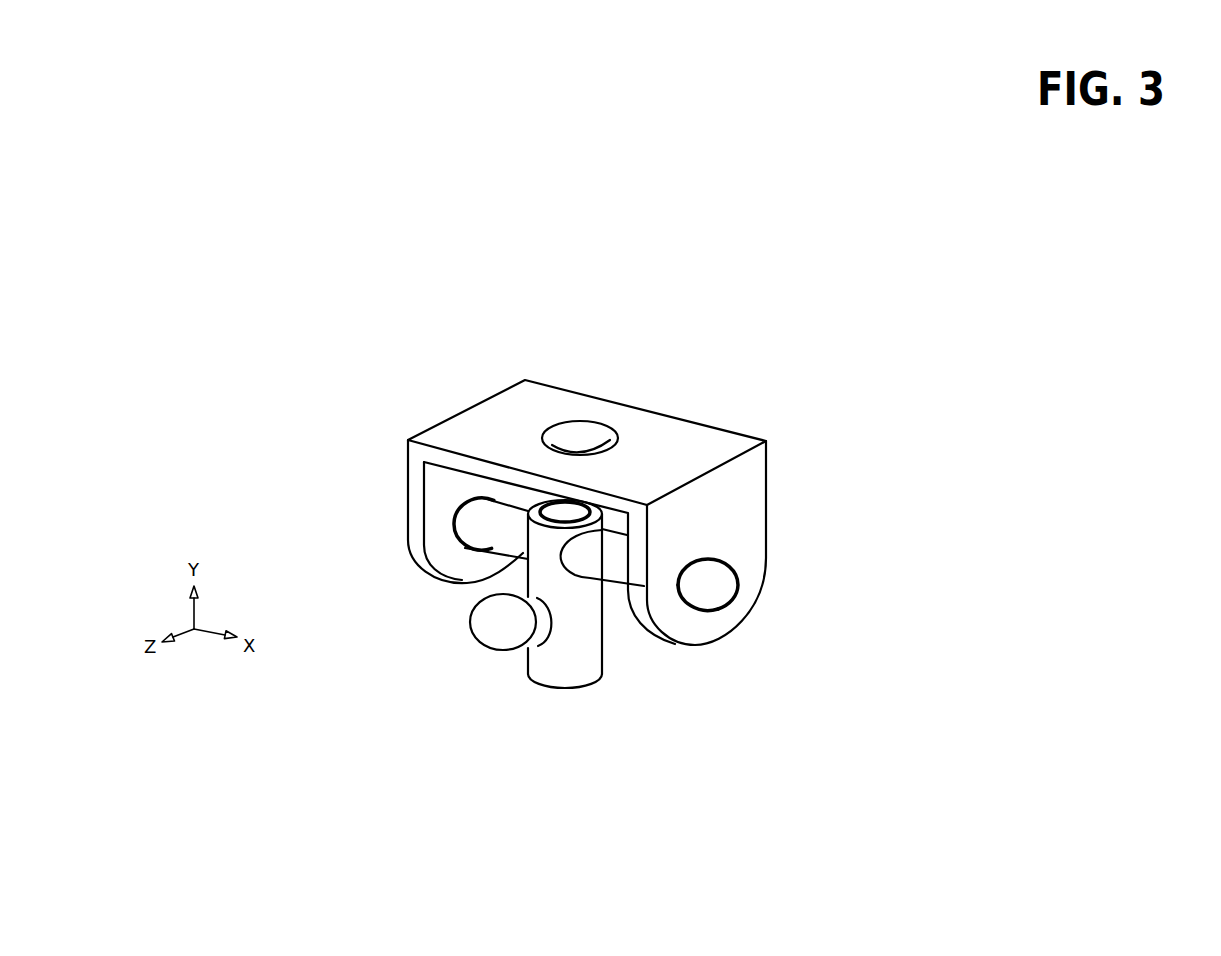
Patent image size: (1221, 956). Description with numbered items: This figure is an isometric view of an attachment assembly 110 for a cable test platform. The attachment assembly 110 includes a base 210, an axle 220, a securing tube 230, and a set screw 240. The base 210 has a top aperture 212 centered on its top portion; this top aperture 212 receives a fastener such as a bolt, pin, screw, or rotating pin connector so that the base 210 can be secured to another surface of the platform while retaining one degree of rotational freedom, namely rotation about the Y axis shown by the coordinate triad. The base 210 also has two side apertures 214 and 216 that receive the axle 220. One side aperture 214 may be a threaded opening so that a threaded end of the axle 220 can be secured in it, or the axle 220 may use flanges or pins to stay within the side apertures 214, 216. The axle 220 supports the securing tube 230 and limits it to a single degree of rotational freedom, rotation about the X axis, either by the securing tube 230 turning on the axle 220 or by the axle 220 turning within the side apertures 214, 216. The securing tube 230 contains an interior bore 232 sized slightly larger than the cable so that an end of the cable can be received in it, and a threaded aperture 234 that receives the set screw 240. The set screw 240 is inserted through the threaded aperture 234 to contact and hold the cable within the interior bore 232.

The attachment assembly 110 is at (363, 274).
The base 210 is at (767, 468).
The top aperture 212 is at (545, 415).
The side aperture 214 is at (721, 624).
The side aperture 216 is at (444, 495).
The axle 220 is at (727, 577).
The securing tube 230 is at (532, 683).
The interior bore 232 is at (585, 490).
The threaded aperture 234 is at (576, 637).
The set screw 240 is at (480, 625).